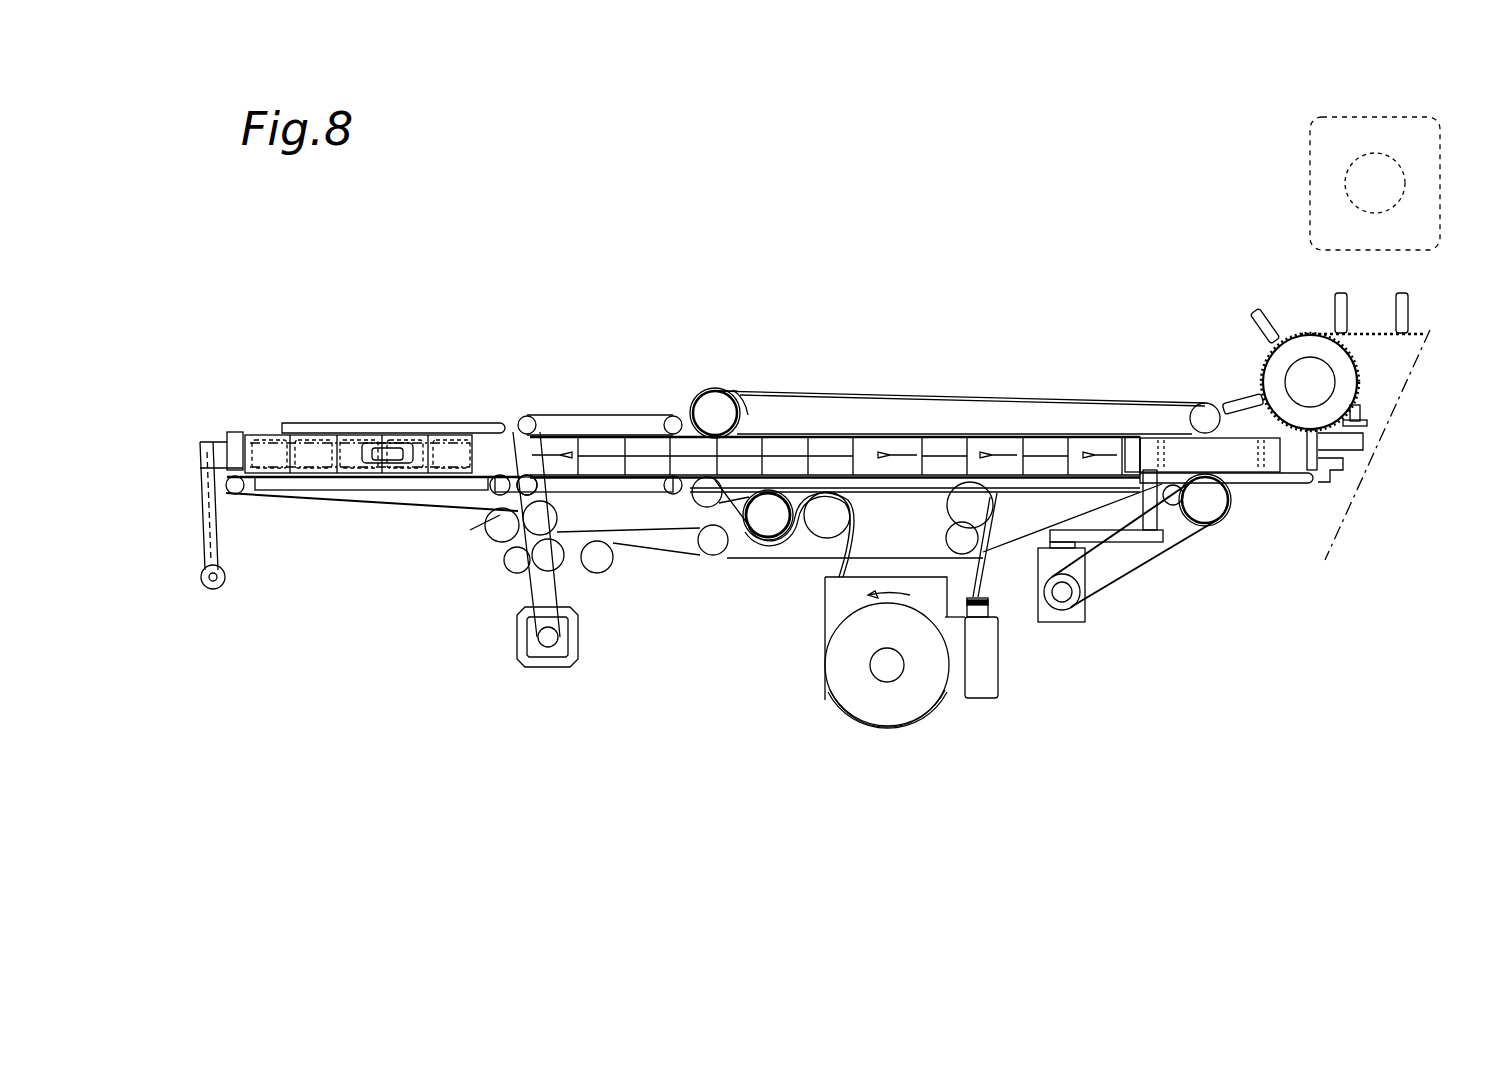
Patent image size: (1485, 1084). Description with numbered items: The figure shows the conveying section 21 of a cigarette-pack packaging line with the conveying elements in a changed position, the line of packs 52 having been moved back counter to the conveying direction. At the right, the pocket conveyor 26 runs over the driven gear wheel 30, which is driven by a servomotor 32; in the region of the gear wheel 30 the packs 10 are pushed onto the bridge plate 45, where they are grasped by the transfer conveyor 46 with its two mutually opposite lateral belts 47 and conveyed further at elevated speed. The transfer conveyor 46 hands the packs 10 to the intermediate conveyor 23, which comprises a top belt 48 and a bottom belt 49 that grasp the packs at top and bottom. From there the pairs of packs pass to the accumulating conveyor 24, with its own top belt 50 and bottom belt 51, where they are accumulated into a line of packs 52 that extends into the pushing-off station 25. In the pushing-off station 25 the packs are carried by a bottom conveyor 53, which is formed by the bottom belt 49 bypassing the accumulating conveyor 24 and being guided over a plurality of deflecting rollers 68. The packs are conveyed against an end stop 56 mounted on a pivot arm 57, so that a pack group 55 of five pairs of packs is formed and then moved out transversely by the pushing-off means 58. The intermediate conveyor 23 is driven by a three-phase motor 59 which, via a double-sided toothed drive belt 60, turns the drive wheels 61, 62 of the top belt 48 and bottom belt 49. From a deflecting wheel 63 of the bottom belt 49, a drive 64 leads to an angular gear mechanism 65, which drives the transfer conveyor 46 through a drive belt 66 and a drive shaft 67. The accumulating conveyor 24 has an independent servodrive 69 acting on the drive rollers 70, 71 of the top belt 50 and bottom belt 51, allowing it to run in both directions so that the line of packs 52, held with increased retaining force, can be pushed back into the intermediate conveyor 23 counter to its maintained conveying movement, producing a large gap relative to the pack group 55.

The packs 10 is at (858, 462).
The conveying section 21 is at (945, 292).
The intermediate conveyor 23 is at (1025, 355).
The accumulating conveyor 24 is at (600, 380).
The pushing-off station 25 is at (343, 380).
The pocket conveyor 26 is at (1298, 308).
The gear wheel 30 is at (1268, 362).
The servomotor 32 is at (1310, 187).
The bridge plate 45 is at (1300, 480).
The transfer conveyor 46 is at (1187, 437).
The lateral belts 47 is at (1245, 462).
The top belt 48 is at (925, 435).
The bottom belt 49 is at (332, 495).
The top belt 50 is at (566, 432).
The bottom belt 51 is at (628, 500).
The line of packs 52 is at (815, 427).
The bottom conveyor 53 is at (385, 432).
The pack group 55 is at (264, 415).
The end stop 56 is at (232, 430).
The pivot arm 57 is at (222, 525).
The pushing-off means 58 is at (440, 435).
The three-phase motor 59 is at (885, 705).
The drive belt 60 is at (747, 420).
The drive wheel 61 is at (770, 520).
The drive wheel 62 is at (710, 425).
The deflecting wheel 63 is at (1228, 518).
The drive 64 is at (1143, 560).
The angular gear mechanism 65 is at (1065, 595).
The drive belt 66 is at (1097, 530).
The drive shaft 67 is at (1137, 485).
The deflecting rollers 68 is at (545, 555).
The servodrive 69 is at (525, 658).
The drive roller 70 is at (524, 412).
The drive roller 71 is at (520, 490).